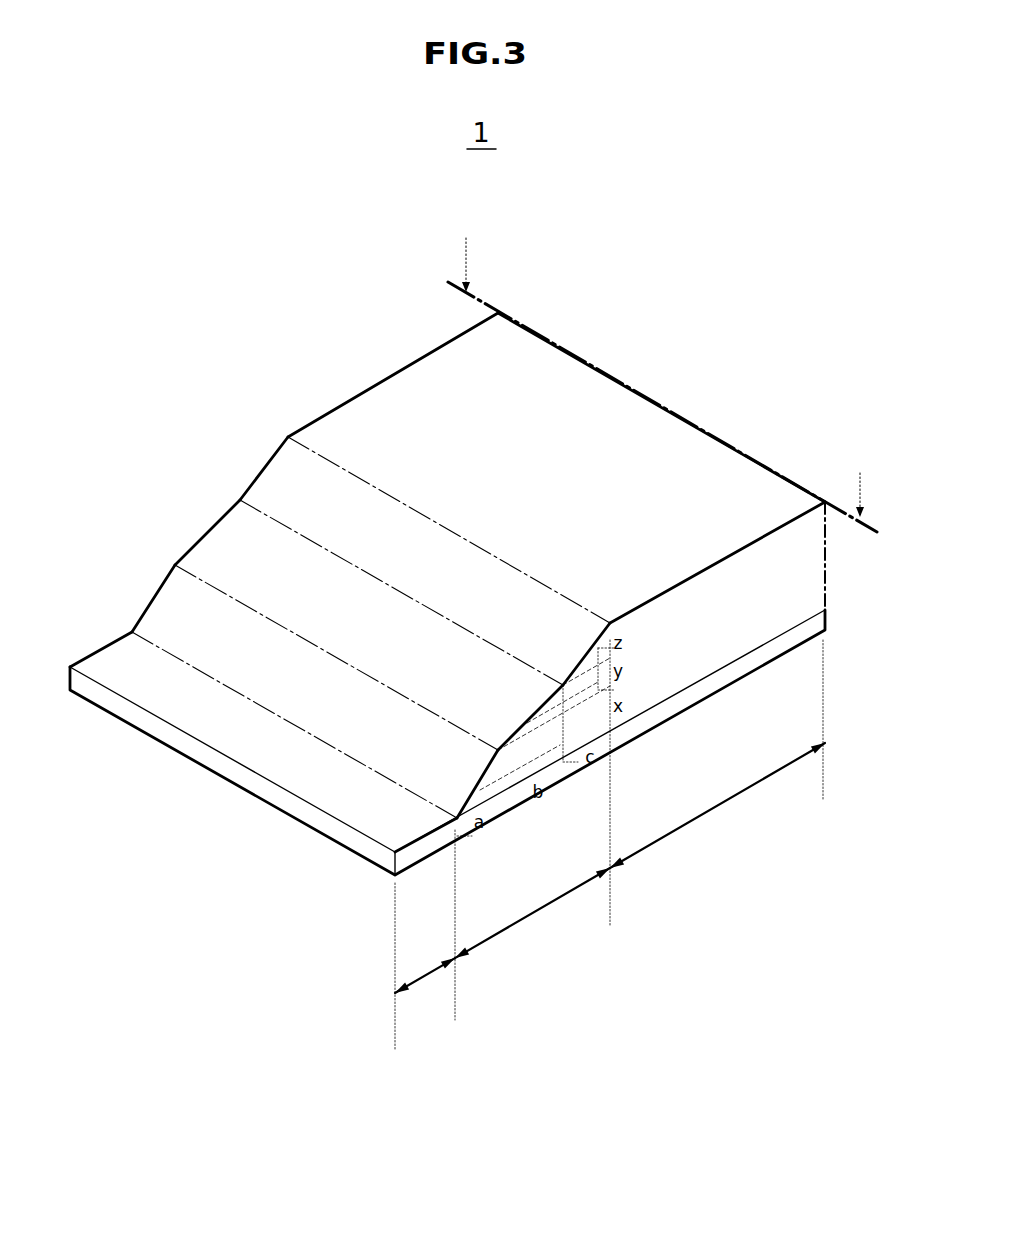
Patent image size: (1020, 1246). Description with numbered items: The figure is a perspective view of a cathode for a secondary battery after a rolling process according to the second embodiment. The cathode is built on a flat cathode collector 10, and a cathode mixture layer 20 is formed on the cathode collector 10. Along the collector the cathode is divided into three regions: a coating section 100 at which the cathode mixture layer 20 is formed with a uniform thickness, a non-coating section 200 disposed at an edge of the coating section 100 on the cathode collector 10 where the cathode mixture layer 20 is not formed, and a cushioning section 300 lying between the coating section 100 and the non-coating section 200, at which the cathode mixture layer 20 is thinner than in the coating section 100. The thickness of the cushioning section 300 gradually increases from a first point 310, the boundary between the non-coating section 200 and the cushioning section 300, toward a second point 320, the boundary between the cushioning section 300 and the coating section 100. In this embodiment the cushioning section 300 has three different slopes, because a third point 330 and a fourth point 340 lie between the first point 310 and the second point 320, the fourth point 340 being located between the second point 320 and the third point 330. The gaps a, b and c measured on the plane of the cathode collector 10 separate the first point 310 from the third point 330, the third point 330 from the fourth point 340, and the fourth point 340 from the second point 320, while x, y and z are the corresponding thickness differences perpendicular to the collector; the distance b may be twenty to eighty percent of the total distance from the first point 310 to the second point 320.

The cathode collector 10 is at (710, 683).
The cathode mixture layer 20 is at (612, 445).
The first point 310 is at (162, 650).
The second point 320 is at (330, 462).
The third point 330 is at (207, 582).
The fourth point 340 is at (270, 515).
The coating section 100 is at (717, 805).
The non-coating section 200 is at (424, 992).
The cushioning section 300 is at (532, 913).